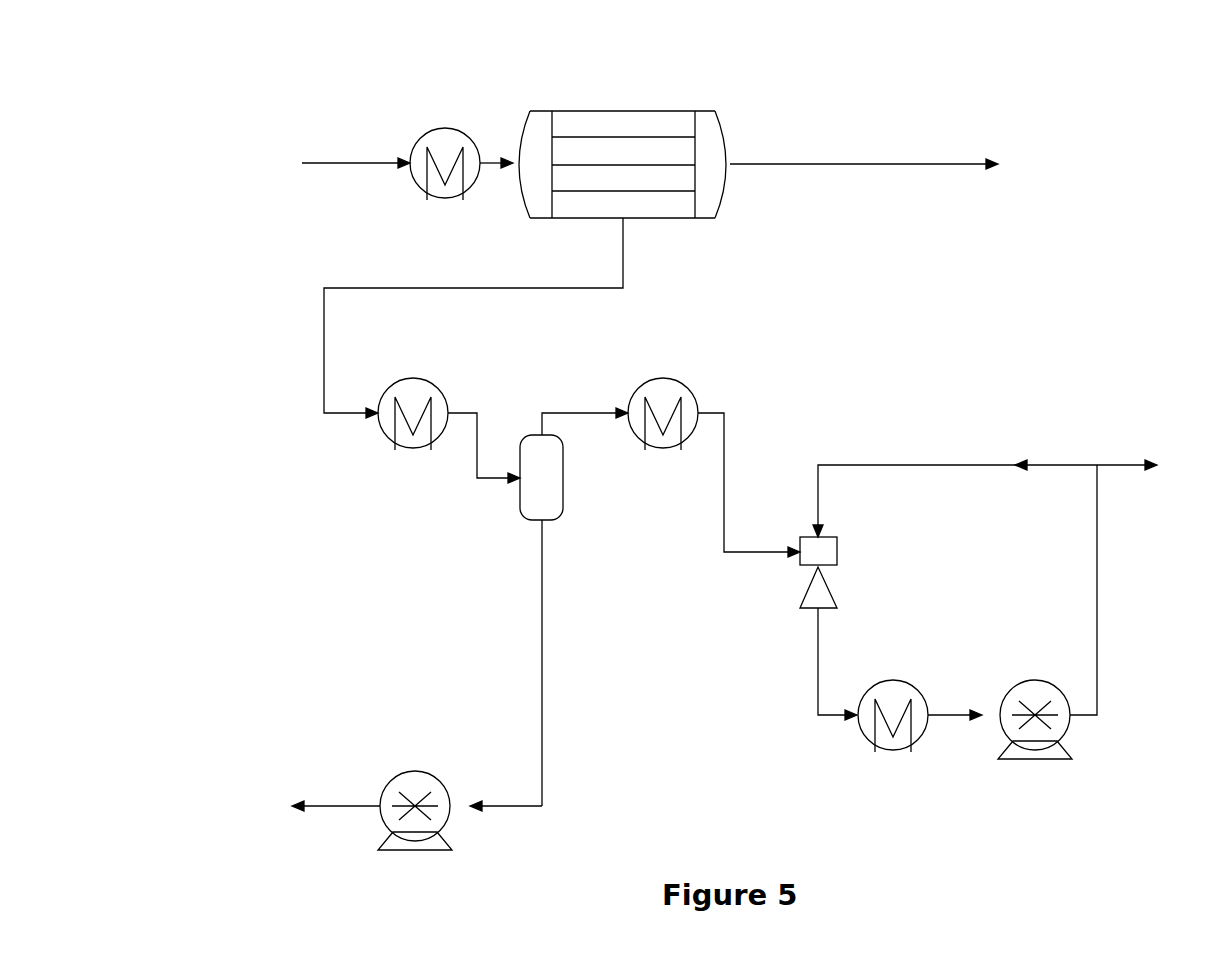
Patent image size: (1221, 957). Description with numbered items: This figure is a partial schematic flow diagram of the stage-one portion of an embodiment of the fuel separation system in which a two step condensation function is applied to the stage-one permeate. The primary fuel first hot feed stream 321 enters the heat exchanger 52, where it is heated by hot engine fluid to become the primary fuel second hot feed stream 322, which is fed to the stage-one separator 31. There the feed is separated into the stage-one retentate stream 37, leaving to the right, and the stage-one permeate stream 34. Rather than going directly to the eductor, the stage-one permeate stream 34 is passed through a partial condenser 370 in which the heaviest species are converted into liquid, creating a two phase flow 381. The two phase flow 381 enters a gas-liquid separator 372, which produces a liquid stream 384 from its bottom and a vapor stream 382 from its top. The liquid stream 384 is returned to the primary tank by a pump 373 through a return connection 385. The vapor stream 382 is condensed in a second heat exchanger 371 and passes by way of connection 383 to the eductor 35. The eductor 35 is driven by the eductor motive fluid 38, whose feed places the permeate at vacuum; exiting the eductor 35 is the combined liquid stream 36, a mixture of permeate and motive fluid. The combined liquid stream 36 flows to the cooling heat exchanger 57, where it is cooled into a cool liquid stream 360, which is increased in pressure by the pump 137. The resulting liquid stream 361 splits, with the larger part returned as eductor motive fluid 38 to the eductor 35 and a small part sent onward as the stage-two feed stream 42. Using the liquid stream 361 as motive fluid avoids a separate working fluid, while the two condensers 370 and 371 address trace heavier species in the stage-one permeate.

The primary fuel first hot feed stream 321 is at (330, 163).
The heat exchanger 52 is at (422, 136).
The primary fuel second hot feed stream 322 is at (490, 162).
The stage-one separator 31 is at (620, 110).
The stage-one retentate stream 37 is at (810, 165).
The stage-one permeate stream 34 is at (376, 290).
The partial condenser 370 is at (450, 405).
The two phase flow 381 is at (488, 482).
The vapor stream 382 is at (582, 415).
The heat exchanger 371 is at (700, 405).
The connection 383 is at (727, 457).
The eductor 35 is at (837, 553).
The eductor motive fluid 38 is at (983, 466).
The stage-two feed stream 42 is at (1085, 467).
The liquid stream 361 is at (1097, 590).
The combined liquid stream 36 is at (813, 635).
The cooling heat exchanger 57 is at (862, 742).
The cool liquid stream 360 is at (945, 718).
The pump 137 is at (1053, 767).
The gas-liquid separator 372 is at (563, 515).
The liquid stream 384 is at (540, 752).
The pump 373 is at (413, 770).
The return connection 385 is at (338, 806).